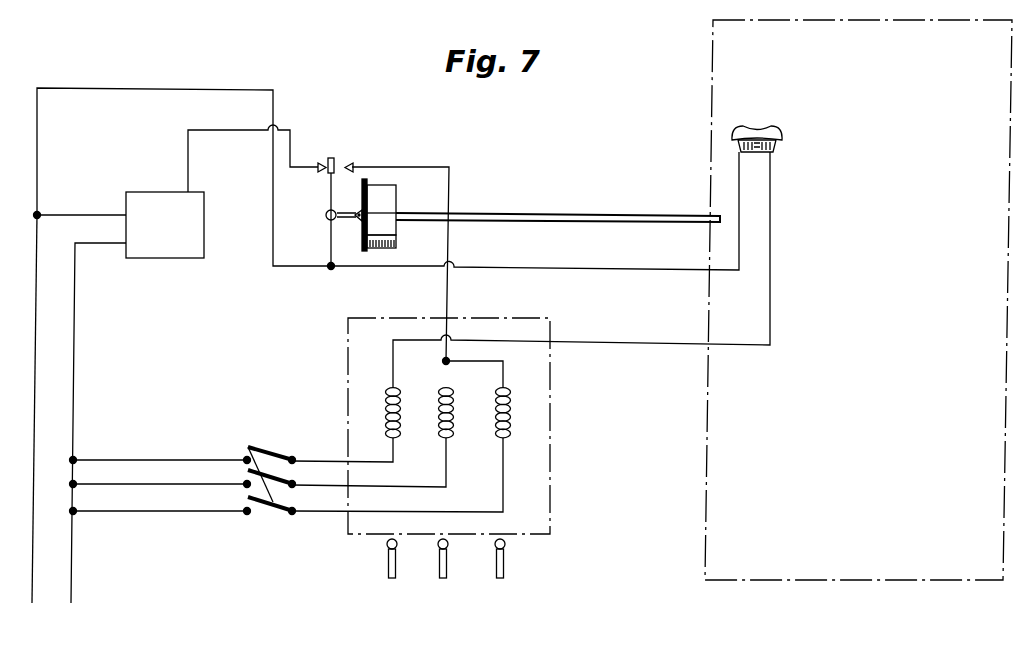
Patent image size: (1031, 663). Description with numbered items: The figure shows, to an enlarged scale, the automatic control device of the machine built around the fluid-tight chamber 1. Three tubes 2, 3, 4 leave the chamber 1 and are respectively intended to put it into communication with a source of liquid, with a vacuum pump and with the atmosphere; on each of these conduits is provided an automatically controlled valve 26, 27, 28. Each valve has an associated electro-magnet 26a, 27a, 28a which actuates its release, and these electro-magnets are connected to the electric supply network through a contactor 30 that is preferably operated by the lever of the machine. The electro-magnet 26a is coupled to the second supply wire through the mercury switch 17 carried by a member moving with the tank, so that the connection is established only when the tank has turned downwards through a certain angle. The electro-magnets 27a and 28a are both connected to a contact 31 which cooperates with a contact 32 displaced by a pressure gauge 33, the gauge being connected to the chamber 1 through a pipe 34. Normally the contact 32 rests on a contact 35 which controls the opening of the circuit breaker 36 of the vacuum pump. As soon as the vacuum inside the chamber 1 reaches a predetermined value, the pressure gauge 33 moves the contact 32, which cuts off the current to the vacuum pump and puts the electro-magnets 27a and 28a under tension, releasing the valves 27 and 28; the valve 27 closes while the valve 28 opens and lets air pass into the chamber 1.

The fluid-tight chamber 1 is at (713, 70).
The mercury switch 17 is at (765, 136).
The pipe 34 is at (595, 215).
The pressure gauge 33 is at (377, 203).
The contact 31 is at (350, 163).
The contact 32 is at (333, 158).
The contact 35 is at (318, 163).
The circuit breaker 36 is at (180, 240).
The contactor 30 is at (248, 447).
The electro-magnet 26a is at (386, 410).
The electro-magnet 27a is at (453, 421).
The electro-magnet 28a is at (511, 416).
The valve 26 is at (387, 544).
The valve 27 is at (452, 547).
The valve 28 is at (506, 547).
The tube 2 is at (395, 570).
The tube 3 is at (436, 567).
The tube 4 is at (503, 565).